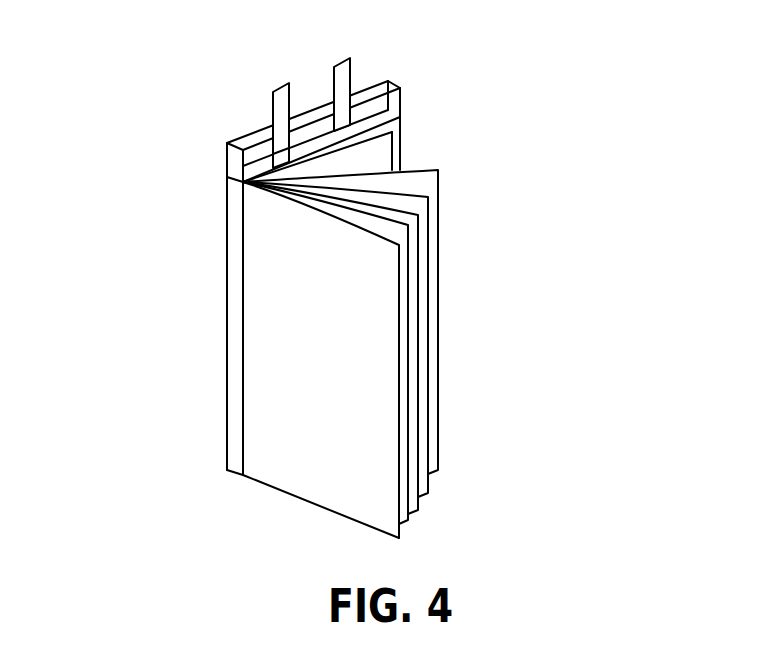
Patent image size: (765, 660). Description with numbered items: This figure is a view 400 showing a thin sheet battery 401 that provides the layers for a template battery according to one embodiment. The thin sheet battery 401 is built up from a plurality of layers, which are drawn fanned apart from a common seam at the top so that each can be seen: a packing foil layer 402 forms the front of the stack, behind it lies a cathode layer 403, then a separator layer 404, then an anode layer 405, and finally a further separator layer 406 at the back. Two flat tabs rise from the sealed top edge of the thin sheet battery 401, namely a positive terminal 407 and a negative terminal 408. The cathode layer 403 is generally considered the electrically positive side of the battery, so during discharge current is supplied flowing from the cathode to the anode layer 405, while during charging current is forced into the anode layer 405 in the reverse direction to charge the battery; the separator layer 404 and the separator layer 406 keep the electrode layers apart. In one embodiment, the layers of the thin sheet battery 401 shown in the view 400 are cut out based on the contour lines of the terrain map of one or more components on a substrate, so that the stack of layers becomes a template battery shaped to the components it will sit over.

The view 400 is at (599, 54).
The thin sheet battery 401 is at (190, 120).
The packing foil layer 402 is at (393, 474).
The cathode layer 403 is at (408, 403).
The separator layer 404 is at (418, 346).
The anode layer 405 is at (428, 295).
The separator layer 406 is at (438, 247).
The positive terminal 407 is at (346, 70).
The negative terminal 408 is at (277, 102).